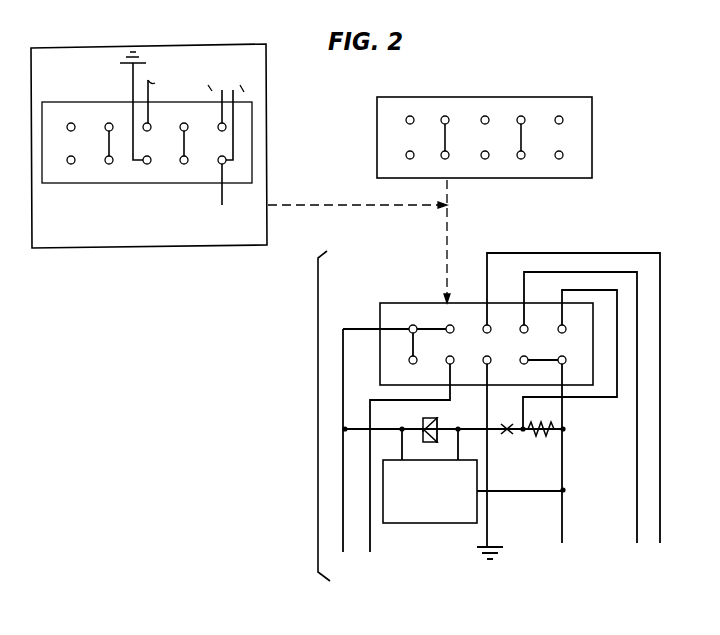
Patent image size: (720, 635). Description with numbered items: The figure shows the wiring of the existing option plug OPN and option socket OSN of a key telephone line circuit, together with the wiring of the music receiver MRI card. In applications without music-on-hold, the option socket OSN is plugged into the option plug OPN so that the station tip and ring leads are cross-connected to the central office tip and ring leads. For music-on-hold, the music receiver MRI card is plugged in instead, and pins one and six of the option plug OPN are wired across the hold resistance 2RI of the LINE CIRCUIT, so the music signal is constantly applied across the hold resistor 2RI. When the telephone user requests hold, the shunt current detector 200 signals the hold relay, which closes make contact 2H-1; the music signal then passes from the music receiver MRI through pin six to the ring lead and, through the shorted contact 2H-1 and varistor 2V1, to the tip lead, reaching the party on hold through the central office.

The music receiver card MRI is at (85, 248).
The option socket OSN is at (377, 128).
The option plug OPN is at (401, 304).
The shunt current detector 200 is at (447, 524).
The varistor 2V1 is at (423, 419).
The relay make contact 2H-1 is at (506, 436).
The hold resistance 2RI is at (540, 440).
The line circuit LINE CIRCUIT is at (263, 416).